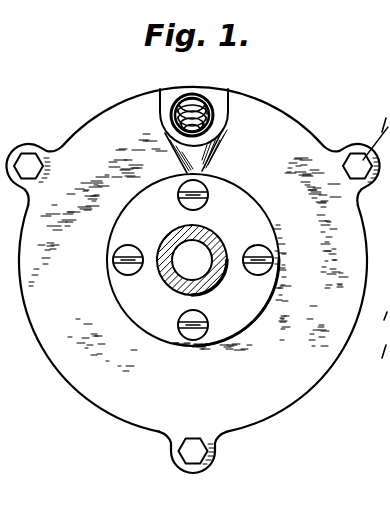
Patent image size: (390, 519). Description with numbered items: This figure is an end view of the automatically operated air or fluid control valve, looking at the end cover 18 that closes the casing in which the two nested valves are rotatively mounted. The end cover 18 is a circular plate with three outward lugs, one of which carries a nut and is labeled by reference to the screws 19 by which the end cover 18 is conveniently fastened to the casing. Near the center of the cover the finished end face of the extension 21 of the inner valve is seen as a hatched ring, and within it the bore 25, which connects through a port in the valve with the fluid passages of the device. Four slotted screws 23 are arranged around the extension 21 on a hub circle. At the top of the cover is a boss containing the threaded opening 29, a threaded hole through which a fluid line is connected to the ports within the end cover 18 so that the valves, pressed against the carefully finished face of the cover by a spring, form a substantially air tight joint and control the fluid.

The end cover 18 is at (302, 155).
The screws 19 is at (27, 162).
The extension of valve 21 is at (215, 242).
The screws 23 is at (187, 320).
The bore 25 is at (193, 257).
The threaded opening 29 is at (213, 113).